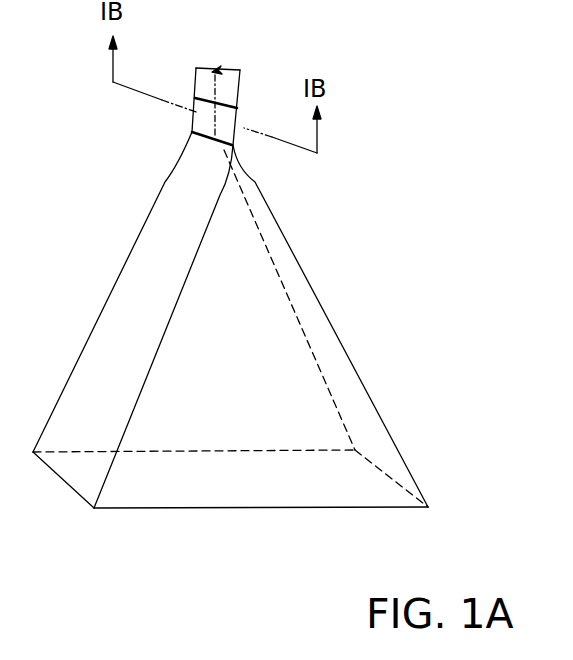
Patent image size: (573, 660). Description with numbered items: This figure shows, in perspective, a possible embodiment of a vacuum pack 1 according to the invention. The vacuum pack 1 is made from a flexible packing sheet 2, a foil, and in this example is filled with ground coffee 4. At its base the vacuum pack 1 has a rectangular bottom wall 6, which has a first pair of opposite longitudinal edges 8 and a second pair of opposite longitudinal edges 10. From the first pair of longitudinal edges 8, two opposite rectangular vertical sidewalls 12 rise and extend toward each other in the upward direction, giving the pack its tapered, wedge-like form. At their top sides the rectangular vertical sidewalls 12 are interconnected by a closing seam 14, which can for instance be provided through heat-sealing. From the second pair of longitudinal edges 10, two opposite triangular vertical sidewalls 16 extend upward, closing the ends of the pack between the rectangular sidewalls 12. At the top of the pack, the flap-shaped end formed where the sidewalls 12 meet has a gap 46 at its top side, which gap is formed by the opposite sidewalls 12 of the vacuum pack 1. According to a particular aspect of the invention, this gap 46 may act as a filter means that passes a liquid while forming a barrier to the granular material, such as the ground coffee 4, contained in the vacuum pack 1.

The vacuum pack 1 is at (487, 576).
The flexible packing sheet 2 is at (240, 92).
The ground coffee 4 is at (239, 342).
The rectangular bottom wall 6 is at (307, 473).
The first pair of longitudinal edges 8 is at (57, 478).
The second pair of longitudinal edges 10 is at (193, 450).
The rectangular vertical sidewall 12 is at (130, 287).
The closing seam 14 is at (208, 102).
The triangular vertical sidewall 16 is at (243, 272).
The gap 46 is at (216, 69).